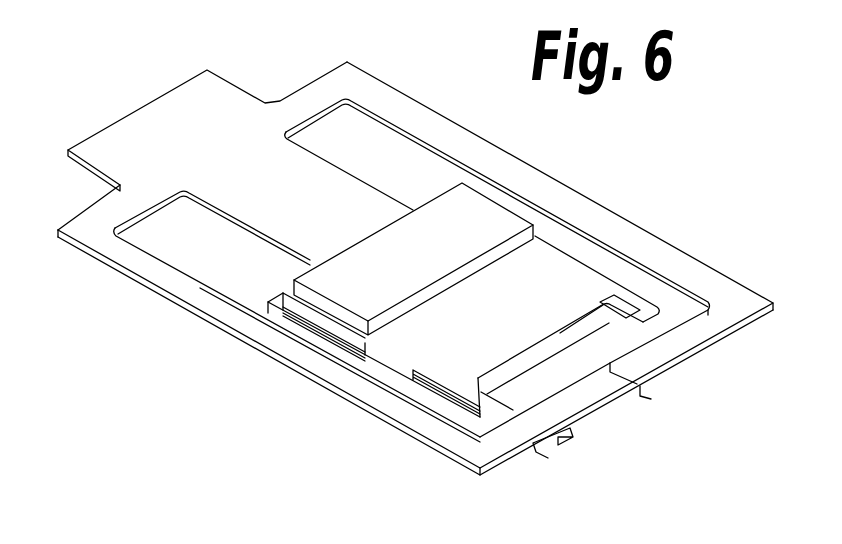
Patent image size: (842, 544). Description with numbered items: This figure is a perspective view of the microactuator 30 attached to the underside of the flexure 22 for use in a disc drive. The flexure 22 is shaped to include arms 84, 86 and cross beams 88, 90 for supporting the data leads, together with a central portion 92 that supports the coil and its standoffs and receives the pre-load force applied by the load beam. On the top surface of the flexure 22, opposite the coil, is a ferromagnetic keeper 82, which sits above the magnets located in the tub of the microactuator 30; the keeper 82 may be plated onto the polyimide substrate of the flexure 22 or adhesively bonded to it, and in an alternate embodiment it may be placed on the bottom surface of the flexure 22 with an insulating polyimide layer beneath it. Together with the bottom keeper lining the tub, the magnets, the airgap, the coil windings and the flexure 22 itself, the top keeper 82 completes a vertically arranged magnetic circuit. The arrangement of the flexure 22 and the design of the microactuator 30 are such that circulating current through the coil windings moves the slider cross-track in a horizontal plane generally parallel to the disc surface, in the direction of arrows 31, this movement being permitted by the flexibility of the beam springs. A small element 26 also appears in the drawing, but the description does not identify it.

The flexure 22 is at (415, 272).
The mounting bracket 26 is at (567, 443).
The microactuator 30 is at (270, 298).
The arrows 31 is at (608, 438).
The ferromagnetic keeper 82 is at (472, 207).
The arm 84 is at (685, 260).
The arm 86 is at (378, 398).
The cross beam 88 is at (668, 348).
The cross beam 90 is at (567, 408).
The central portion 92 is at (578, 283).